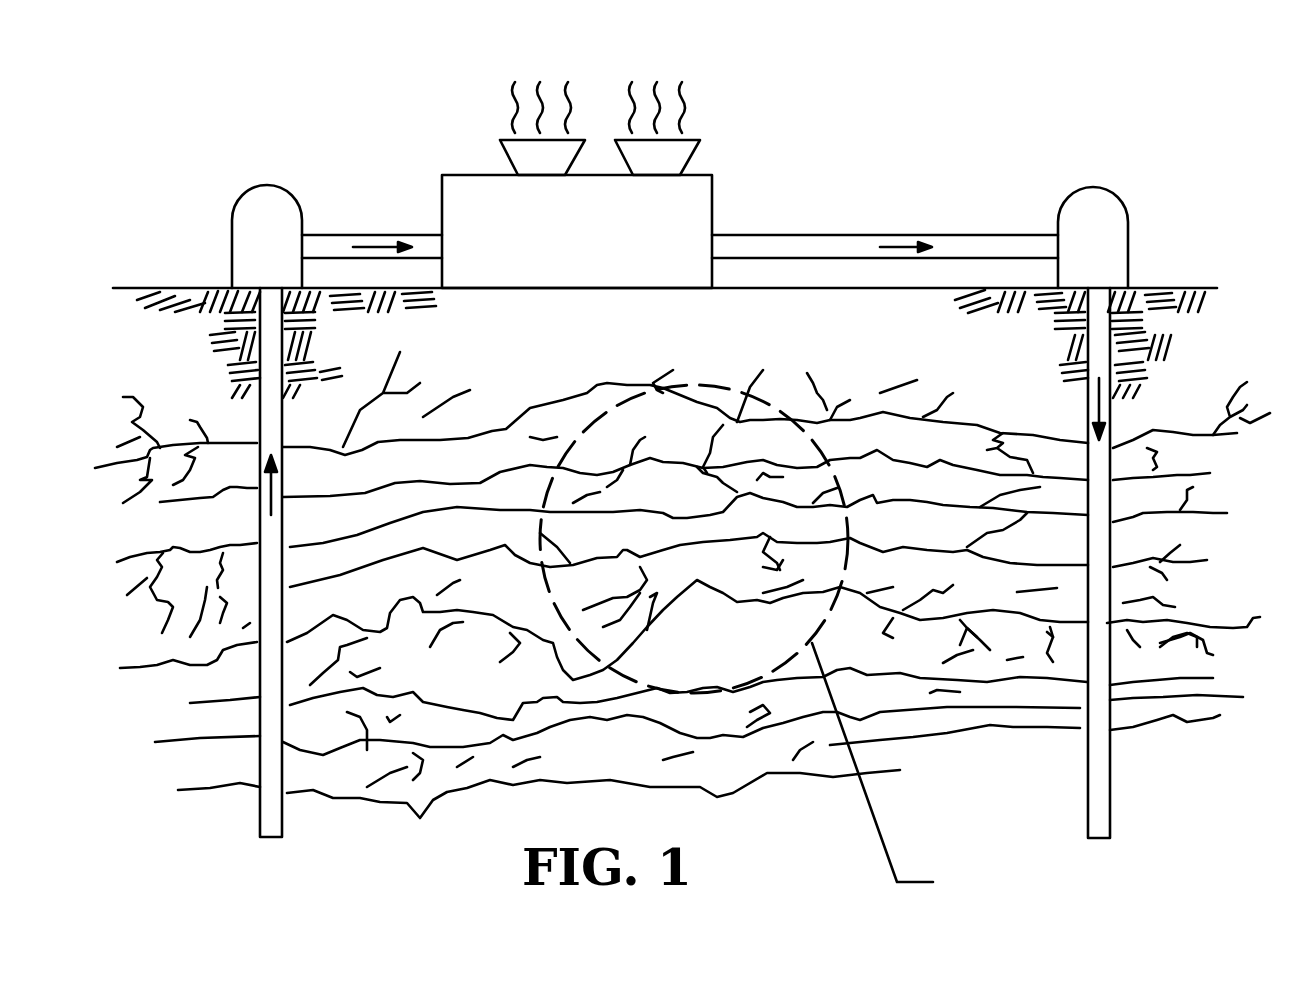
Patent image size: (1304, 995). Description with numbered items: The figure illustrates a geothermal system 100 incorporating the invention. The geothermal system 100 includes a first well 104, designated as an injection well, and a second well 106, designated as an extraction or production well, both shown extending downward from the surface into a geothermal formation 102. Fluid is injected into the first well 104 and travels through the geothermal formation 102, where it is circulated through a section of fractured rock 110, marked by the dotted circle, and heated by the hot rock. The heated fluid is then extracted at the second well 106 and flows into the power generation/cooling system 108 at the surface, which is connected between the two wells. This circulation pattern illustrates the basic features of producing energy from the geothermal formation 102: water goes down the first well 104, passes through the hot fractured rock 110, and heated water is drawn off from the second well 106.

The geothermal system 100 is at (952, 115).
The geothermal formation 102 is at (843, 341).
The first well 104 is at (1128, 212).
The second well 106 is at (288, 190).
The power generation/cooling system 108 is at (600, 239).
The section of fractured geothermal formation 110 is at (746, 649).